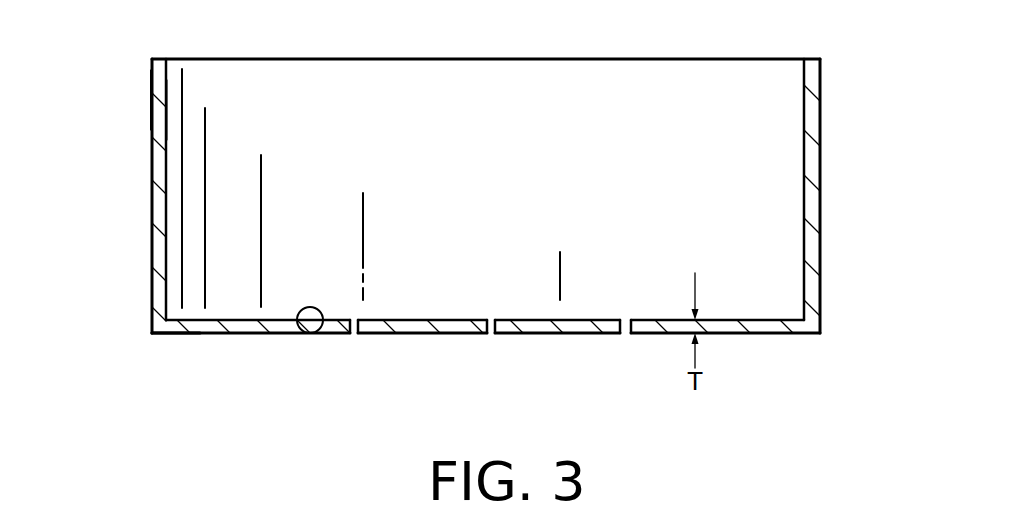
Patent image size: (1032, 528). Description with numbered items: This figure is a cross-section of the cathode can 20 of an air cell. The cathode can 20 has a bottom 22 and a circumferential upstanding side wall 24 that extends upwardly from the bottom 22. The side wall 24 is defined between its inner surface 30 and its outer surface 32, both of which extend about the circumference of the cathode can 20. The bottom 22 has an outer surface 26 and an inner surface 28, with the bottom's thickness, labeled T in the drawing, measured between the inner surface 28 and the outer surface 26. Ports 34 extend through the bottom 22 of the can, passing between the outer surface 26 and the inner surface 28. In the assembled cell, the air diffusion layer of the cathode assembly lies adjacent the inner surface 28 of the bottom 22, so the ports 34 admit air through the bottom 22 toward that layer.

The cathode can 20 is at (830, 104).
The bottom 22 is at (250, 340).
The side wall 24 is at (142, 123).
The outer surface 26 is at (193, 335).
The inner surface 28 is at (315, 335).
The inner surface 30 is at (168, 112).
The outer surface 32 is at (150, 102).
The ports 34 is at (492, 335).